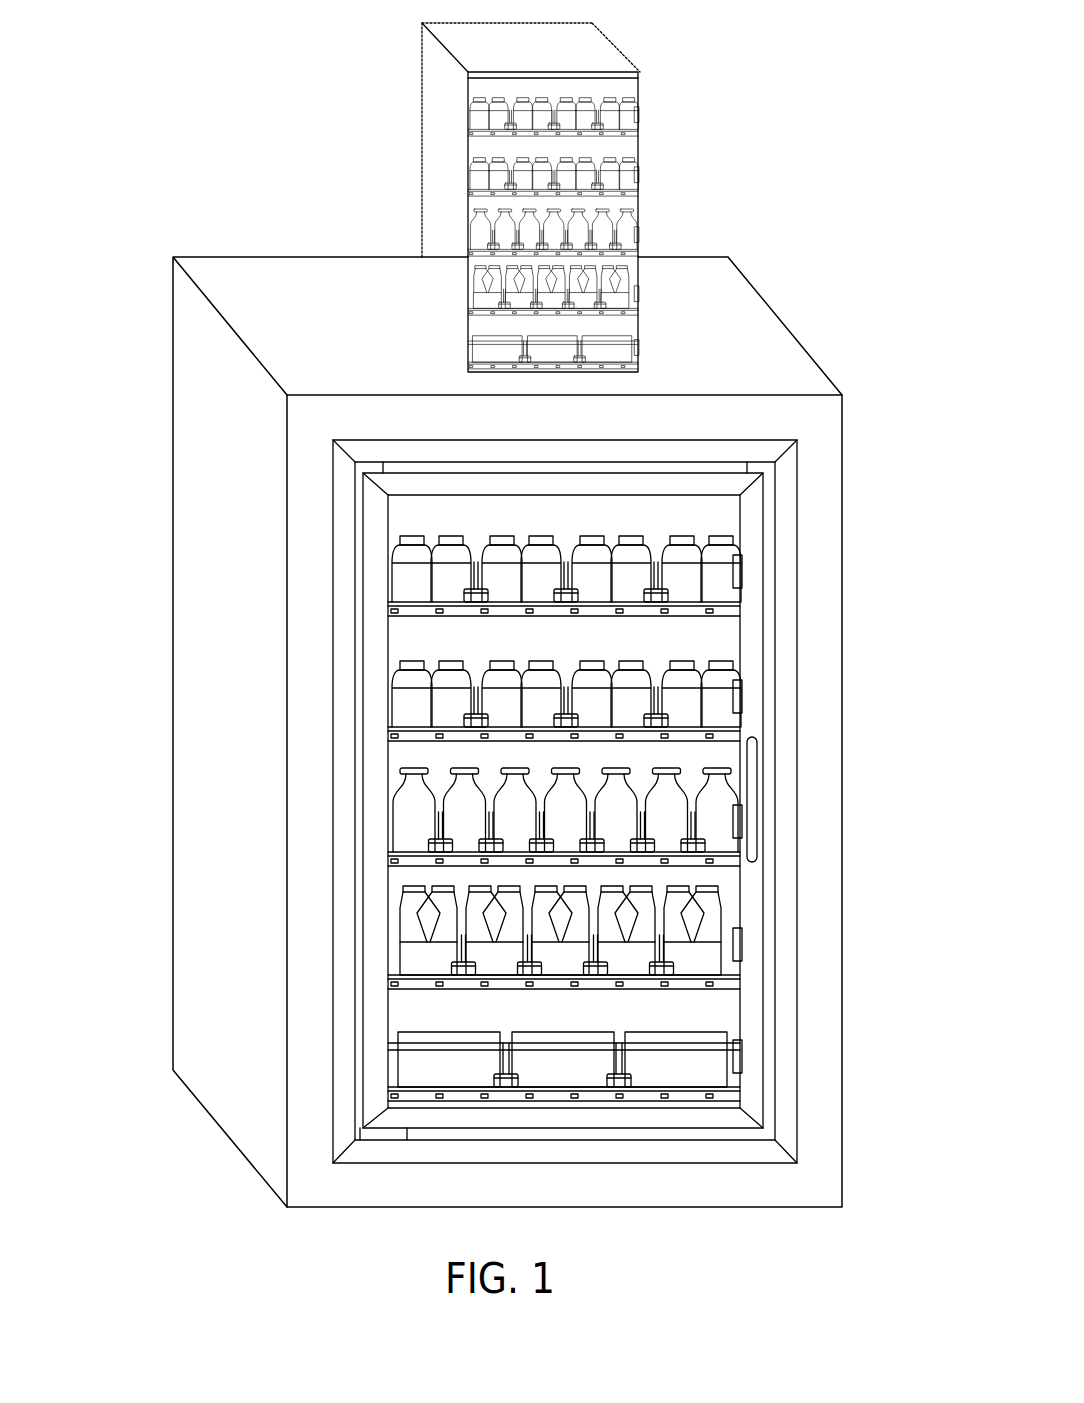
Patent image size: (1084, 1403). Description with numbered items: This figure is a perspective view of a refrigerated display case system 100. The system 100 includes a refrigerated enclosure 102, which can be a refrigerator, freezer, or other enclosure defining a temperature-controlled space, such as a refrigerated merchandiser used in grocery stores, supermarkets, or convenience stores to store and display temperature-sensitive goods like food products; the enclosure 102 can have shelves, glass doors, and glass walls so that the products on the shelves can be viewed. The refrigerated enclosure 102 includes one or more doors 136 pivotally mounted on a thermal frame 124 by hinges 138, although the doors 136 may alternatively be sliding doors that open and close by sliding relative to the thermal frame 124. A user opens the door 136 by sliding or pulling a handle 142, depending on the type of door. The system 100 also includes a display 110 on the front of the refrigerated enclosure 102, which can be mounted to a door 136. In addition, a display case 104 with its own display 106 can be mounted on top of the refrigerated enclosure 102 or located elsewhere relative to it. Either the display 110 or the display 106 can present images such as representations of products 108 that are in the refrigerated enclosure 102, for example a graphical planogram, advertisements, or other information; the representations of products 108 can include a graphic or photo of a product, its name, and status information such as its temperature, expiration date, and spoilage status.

The refrigerated display case system 100 is at (117, 142).
The refrigerated enclosure 102 is at (139, 340).
The display case 104 is at (608, 43).
The display 106 is at (638, 150).
The representations of products 108 is at (467, 315).
The display 110 is at (722, 697).
The thermal frame 124 is at (780, 440).
The door 136 is at (394, 1066).
The hinges 138 is at (338, 443).
The handle 142 is at (758, 798).